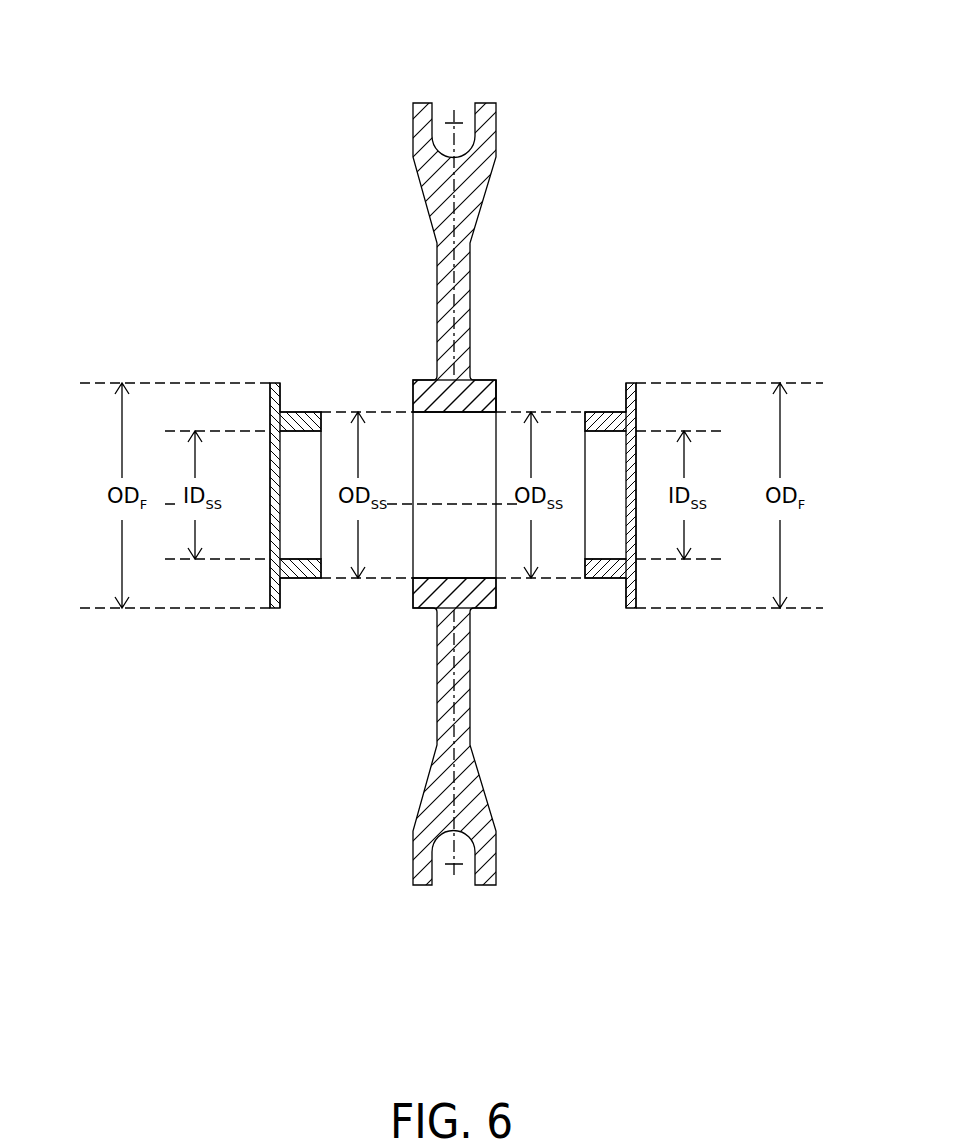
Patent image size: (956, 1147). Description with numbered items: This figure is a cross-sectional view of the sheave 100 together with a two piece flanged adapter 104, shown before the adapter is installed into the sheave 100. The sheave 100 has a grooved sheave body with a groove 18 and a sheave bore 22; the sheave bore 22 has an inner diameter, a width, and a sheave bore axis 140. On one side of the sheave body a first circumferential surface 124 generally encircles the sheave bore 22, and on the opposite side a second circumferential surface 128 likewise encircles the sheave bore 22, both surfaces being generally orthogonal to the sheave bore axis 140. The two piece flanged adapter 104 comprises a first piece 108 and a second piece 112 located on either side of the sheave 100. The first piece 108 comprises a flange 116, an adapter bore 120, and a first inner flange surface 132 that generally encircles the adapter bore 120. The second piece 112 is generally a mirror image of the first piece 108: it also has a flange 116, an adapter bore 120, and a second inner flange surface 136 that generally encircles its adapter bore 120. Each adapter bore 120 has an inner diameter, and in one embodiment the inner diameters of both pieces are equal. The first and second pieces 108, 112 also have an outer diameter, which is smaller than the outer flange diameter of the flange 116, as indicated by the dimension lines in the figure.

The sheave 100 is at (603, 80).
The groove 18 is at (432, 117).
The sheave bore 22 is at (435, 578).
The two piece flanged adapter 104 is at (261, 347).
The first piece 108 is at (318, 580).
The second piece 112 is at (602, 579).
The flange 116 is at (281, 387).
The adapter bore 120 is at (276, 432).
The first circumferential surface 124 is at (413, 386).
The second circumferential surface 128 is at (494, 398).
The first inner flange surface 132 is at (281, 398).
The second inner flange surface 136 is at (625, 398).
The sheave bore axis 140 is at (475, 503).